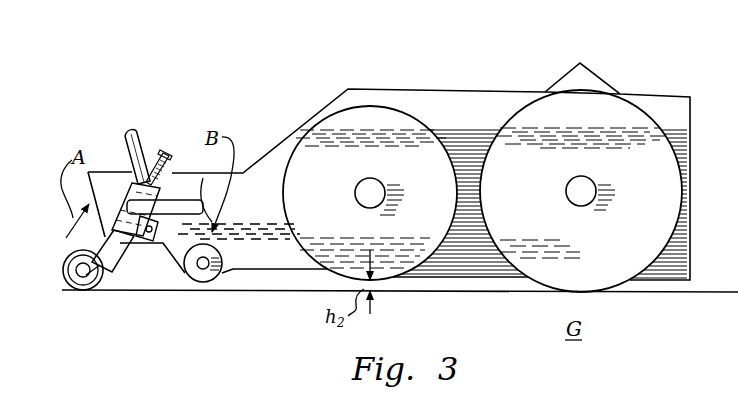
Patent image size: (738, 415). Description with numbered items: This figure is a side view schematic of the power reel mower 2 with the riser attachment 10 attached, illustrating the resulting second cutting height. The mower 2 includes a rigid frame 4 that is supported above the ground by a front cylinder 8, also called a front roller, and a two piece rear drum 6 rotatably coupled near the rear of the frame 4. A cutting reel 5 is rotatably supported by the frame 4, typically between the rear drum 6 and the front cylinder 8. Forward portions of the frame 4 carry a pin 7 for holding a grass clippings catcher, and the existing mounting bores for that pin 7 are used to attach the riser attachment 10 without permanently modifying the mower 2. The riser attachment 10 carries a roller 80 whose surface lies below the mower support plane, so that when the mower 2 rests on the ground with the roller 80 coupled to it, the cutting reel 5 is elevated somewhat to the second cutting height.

The mower 2 is at (464, 82).
The frame 4 is at (256, 216).
The cutting reel 5 is at (335, 130).
The rear drum 6 is at (622, 113).
The pin 7 is at (141, 143).
The front cylinder 8 is at (212, 275).
The riser attachment 10 is at (134, 275).
The roller 80 is at (88, 292).